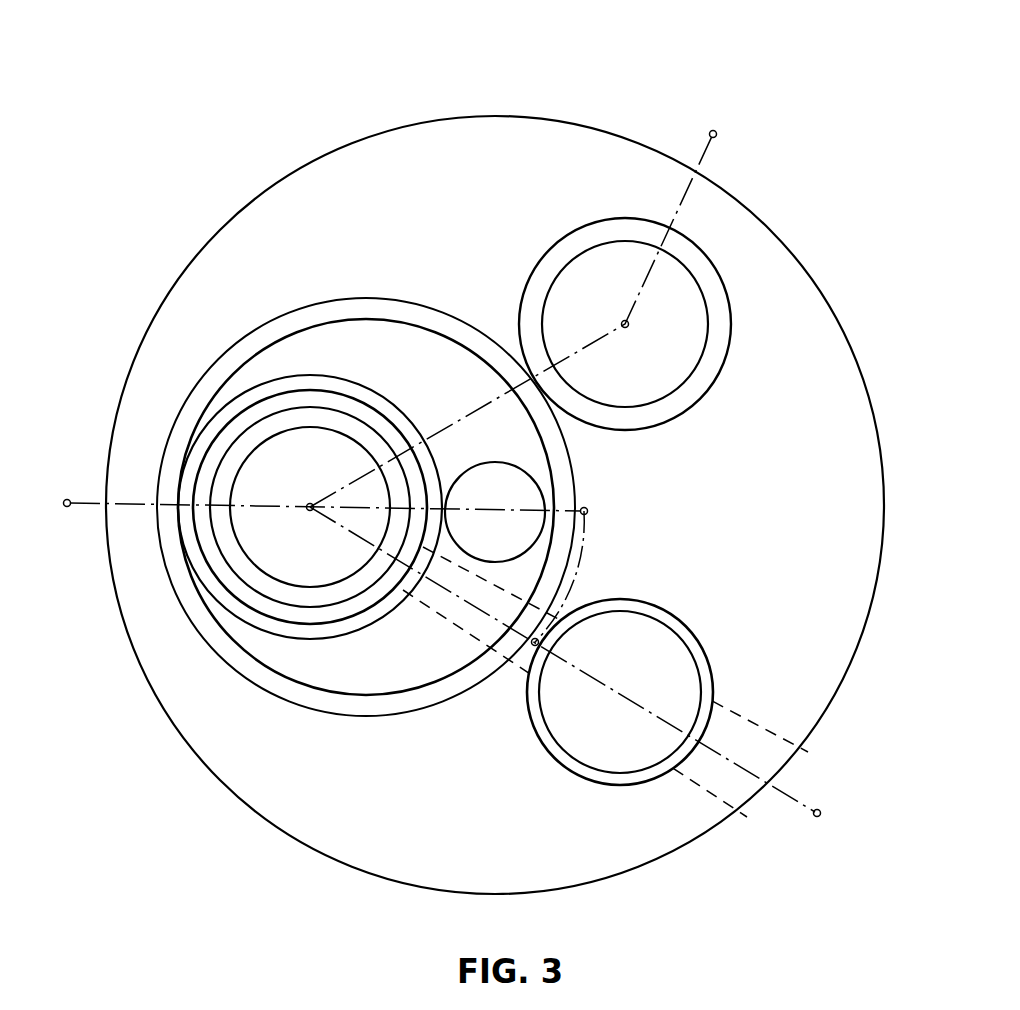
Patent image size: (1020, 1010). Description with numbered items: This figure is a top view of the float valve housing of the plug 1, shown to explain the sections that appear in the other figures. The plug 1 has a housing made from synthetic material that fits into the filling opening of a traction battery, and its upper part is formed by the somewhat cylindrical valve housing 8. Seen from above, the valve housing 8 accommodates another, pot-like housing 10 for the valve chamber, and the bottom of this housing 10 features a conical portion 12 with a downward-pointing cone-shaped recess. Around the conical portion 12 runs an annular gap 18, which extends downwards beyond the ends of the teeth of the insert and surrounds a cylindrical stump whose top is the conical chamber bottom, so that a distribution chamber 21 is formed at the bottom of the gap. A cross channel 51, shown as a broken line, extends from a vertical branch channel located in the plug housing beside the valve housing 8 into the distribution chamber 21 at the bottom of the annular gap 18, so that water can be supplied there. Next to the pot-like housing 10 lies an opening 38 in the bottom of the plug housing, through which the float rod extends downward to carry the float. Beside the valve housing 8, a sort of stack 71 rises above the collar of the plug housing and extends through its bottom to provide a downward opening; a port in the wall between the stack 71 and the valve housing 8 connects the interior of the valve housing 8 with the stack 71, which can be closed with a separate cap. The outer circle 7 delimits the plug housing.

The plug 1 is at (478, 29).
The housing 7 is at (813, 327).
The valve housing 8 is at (380, 305).
The pot-like housing 10 is at (398, 418).
The conical portion 12 is at (307, 563).
The annular gap 18 is at (306, 410).
The distribution chamber 21 is at (306, 410).
The opening 38 is at (517, 488).
The cross channel 51 is at (749, 723).
The stack 71 is at (710, 285).